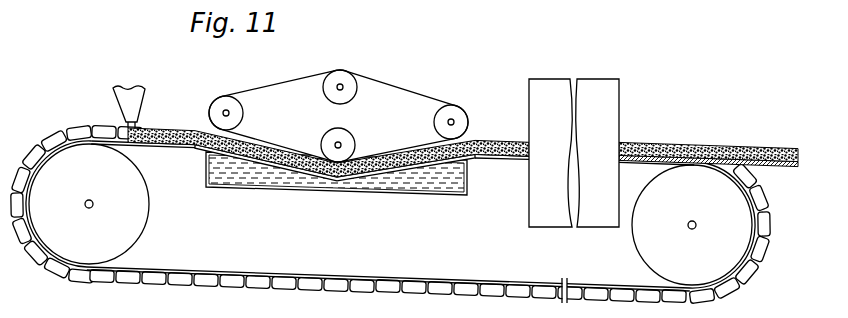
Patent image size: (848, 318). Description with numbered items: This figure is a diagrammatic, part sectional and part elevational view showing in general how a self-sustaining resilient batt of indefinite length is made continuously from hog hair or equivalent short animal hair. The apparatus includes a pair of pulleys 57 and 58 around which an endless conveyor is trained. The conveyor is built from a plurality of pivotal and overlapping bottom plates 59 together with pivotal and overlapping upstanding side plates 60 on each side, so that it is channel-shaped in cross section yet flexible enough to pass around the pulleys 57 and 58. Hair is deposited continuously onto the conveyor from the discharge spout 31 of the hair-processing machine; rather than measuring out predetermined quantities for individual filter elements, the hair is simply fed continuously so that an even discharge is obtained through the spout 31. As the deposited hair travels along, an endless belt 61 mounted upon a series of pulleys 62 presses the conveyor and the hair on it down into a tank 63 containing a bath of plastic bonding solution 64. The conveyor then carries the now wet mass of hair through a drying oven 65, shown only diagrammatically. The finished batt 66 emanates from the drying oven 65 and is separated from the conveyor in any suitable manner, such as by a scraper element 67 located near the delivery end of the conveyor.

The discharge spout 31 is at (146, 97).
The pulley 57 is at (131, 219).
The pulley 58 is at (653, 246).
The bottom plates 59 is at (200, 147).
The upstanding side plates 60 is at (313, 281).
The endless belt 61 is at (384, 83).
The pulleys 62 is at (351, 133).
The tank 63 is at (353, 192).
The plastic bonding solution 64 is at (445, 183).
The drying oven 65 is at (555, 90).
The finished batt 66 is at (679, 148).
The scraper element 67 is at (767, 167).